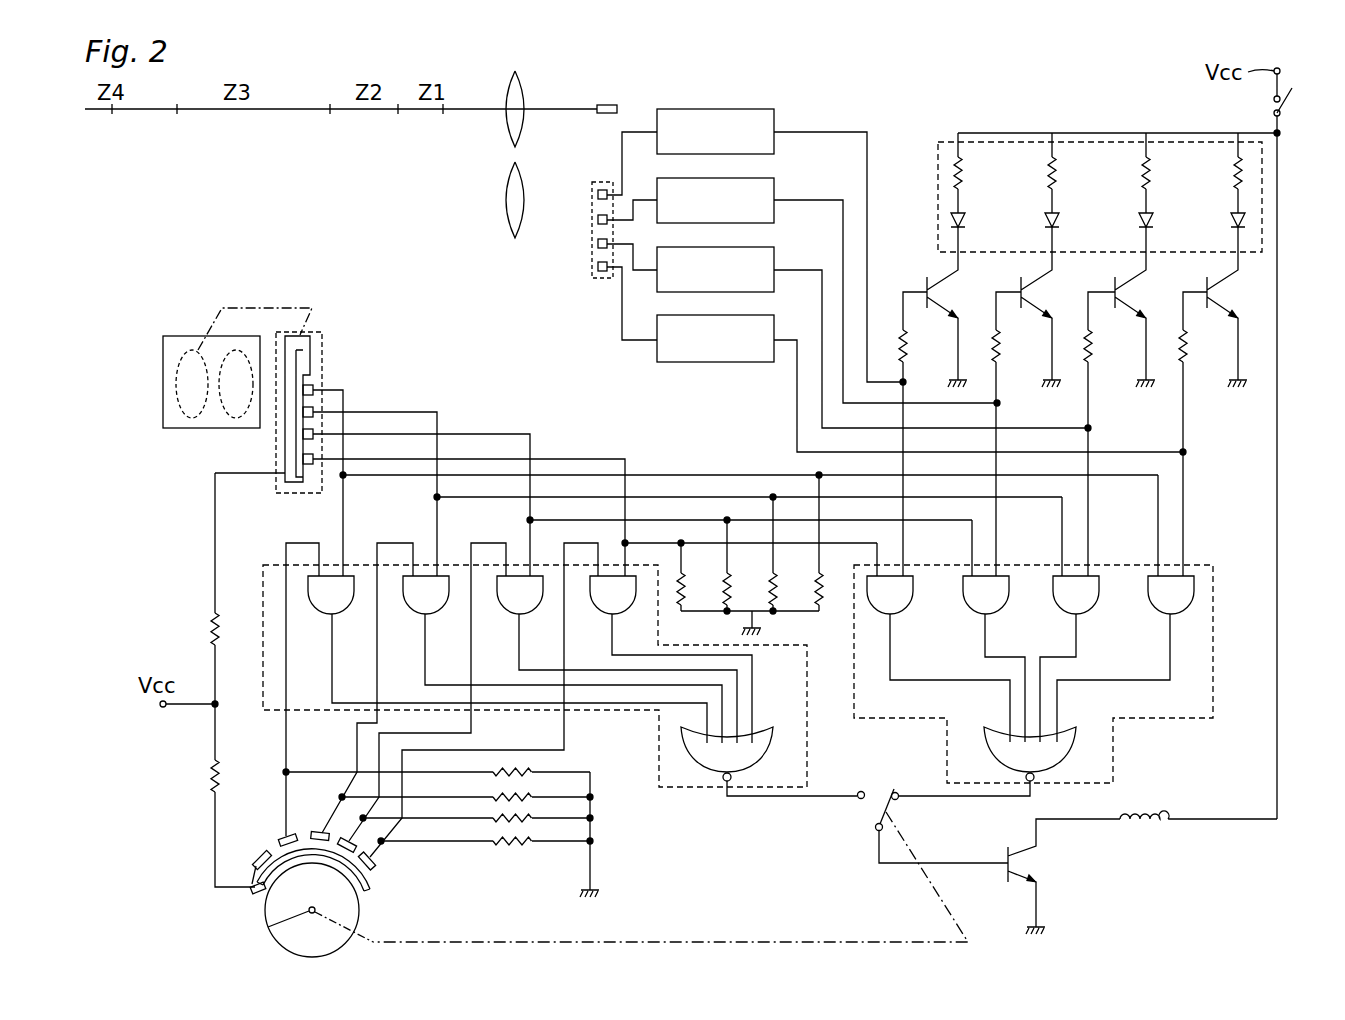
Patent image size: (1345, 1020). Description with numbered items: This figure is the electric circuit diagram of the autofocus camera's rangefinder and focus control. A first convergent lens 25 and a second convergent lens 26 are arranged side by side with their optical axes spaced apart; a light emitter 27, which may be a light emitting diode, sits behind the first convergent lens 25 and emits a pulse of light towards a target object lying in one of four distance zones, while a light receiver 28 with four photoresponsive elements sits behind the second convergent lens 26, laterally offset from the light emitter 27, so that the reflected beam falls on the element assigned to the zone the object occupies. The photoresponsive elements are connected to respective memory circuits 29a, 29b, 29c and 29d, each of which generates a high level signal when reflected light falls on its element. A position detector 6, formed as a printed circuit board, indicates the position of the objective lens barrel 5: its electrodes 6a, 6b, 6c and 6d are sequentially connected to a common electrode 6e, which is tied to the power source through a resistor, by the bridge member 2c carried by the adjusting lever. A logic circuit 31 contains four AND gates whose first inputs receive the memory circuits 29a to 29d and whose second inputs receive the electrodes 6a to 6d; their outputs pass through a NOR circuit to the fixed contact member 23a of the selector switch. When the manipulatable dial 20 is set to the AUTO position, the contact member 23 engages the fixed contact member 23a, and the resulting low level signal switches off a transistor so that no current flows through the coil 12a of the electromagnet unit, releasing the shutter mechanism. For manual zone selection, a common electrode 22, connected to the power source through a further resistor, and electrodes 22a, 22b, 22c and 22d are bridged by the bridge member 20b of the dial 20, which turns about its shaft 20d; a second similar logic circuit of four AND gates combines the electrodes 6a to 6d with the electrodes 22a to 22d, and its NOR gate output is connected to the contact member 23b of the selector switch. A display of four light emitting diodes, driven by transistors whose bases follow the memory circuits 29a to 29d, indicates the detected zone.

The bridge member 2c is at (307, 348).
The objective lens barrel 5 is at (185, 430).
The position detector 6 is at (320, 384).
The electrode 6a is at (314, 388).
The electrode 6b is at (314, 411).
The electrode 6c is at (314, 433).
The electrode 6d is at (308, 466).
The common electrode 6e is at (290, 448).
The coil 12a is at (1150, 824).
The manipulatable dial 20 is at (278, 910).
The bridge member 20b is at (252, 860).
The dial shaft 20d is at (268, 927).
The common electrode 22 is at (372, 892).
The electrode 22a is at (285, 833).
The electrode 22b is at (319, 831).
The electrode 22c is at (355, 849).
The electrode 22d is at (373, 866).
The contact member 23 is at (890, 814).
The fixed contact member 23a is at (898, 801).
The contact member 23b is at (858, 800).
The first convergent lens 25 is at (522, 92).
The second convergent lens 26 is at (504, 205).
The light emitter 27 is at (612, 104).
The light receiver 28 is at (574, 267).
The memory circuit 29a is at (724, 362).
The memory circuit 29b is at (745, 247).
The memory circuit 29c is at (748, 178).
The memory circuit 29d is at (748, 109).
The logic circuit 31 is at (1175, 720).